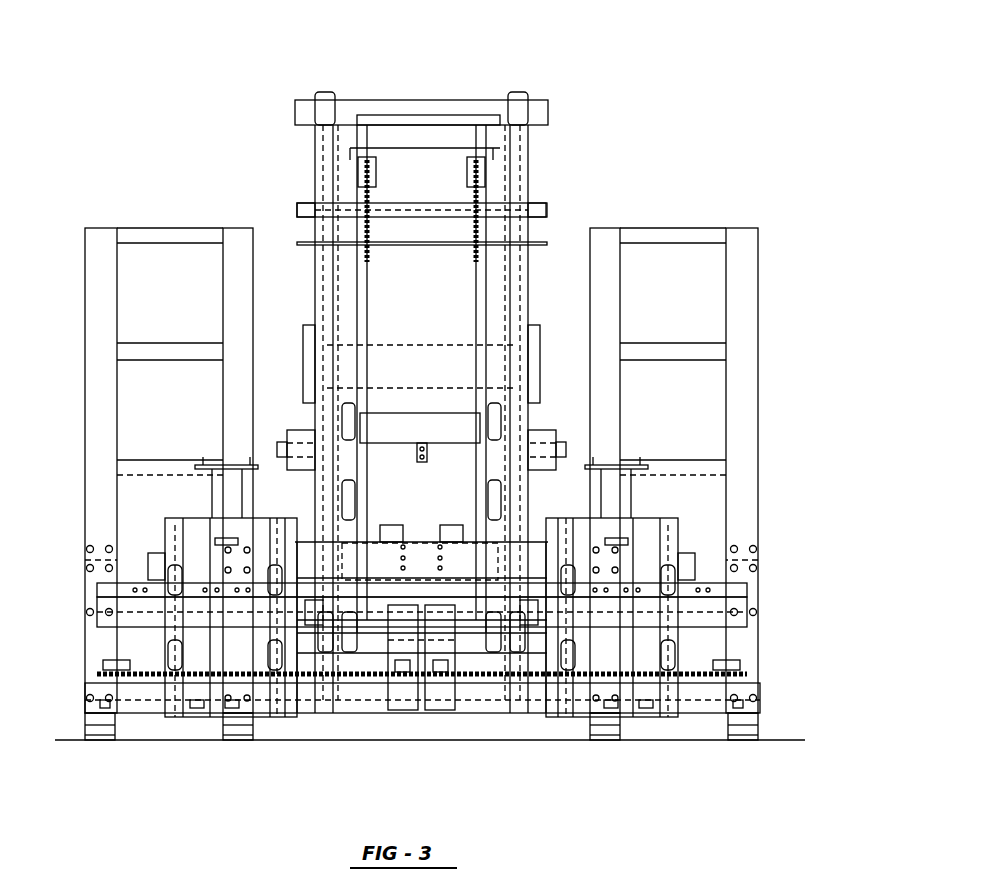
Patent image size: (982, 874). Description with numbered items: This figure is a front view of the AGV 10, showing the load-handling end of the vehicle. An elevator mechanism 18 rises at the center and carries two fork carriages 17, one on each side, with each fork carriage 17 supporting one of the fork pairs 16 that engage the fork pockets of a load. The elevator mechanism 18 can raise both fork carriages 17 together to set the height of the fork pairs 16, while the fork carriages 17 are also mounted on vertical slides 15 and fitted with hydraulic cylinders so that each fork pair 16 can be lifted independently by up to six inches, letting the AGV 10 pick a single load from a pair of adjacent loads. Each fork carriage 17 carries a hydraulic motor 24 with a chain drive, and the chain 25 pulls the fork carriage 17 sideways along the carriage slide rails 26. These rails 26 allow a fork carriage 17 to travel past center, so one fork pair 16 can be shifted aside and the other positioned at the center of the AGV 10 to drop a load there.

The AGV 10 is at (423, 408).
The vertical slides 15 is at (421, 599).
The fork pairs 16 is at (416, 764).
The fork carriage 17 is at (445, 470).
The elevator mechanism 18 is at (464, 379).
The hydraulic motor 24 is at (425, 698).
The chain 25 is at (454, 690).
The carriage slide rails 26 is at (423, 634).